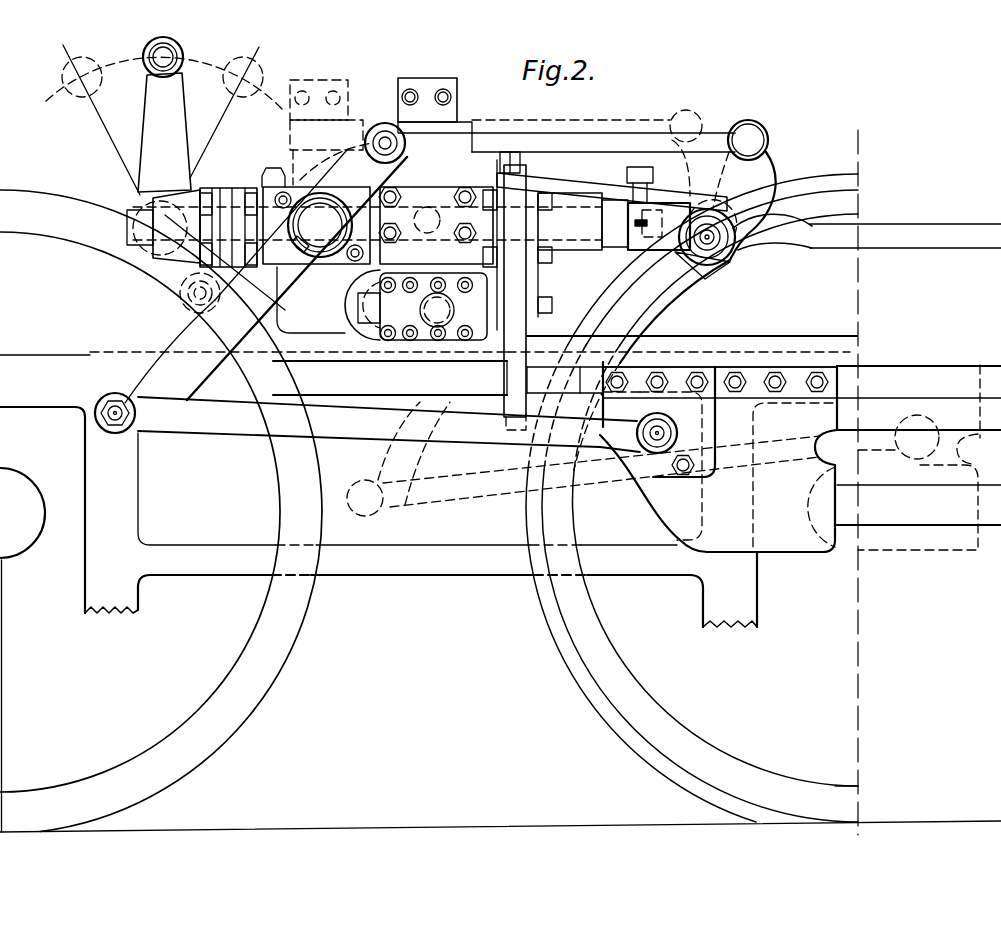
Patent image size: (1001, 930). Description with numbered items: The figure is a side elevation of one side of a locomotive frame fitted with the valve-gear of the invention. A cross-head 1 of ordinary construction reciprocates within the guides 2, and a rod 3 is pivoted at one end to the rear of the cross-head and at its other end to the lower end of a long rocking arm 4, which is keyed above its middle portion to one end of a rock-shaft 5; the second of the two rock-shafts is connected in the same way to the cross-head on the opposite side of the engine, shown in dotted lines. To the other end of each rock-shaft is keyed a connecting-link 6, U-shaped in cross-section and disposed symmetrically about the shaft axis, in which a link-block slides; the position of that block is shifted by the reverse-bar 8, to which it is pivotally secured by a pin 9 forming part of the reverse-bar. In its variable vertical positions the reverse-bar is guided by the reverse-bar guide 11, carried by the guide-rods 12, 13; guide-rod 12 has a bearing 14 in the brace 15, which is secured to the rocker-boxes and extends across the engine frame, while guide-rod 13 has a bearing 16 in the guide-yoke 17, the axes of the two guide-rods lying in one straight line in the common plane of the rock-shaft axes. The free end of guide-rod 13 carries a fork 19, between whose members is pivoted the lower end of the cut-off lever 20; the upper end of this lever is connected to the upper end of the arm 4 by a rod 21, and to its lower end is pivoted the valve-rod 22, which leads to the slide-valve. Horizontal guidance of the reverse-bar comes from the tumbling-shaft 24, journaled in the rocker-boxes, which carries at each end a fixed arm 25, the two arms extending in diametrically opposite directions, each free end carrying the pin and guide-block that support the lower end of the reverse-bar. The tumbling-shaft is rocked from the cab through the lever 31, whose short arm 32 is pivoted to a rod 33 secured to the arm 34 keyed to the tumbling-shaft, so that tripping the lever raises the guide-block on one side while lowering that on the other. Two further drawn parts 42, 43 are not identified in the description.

The cross-head 1 is at (657, 487).
The guides 2 is at (895, 403).
The rod 3 is at (478, 420).
The rocking arm 4 is at (168, 384).
The rock-shaft 5 is at (316, 216).
The connecting-link 6 is at (318, 168).
The reverse-bar 8 is at (428, 80).
The pin 9 is at (427, 233).
The reverse-bar guide 11 is at (473, 123).
The guide-rod 12 is at (128, 210).
The guide-rod 13 is at (630, 238).
The bearing 14 is at (166, 226).
The brace 15 is at (232, 192).
The bearing 16 is at (577, 249).
The guide-yoke 17 is at (512, 295).
The fork 19 is at (700, 210).
The cut-off lever 20 is at (700, 124).
The rod 21 is at (583, 131).
The valve-rod 22 is at (904, 226).
The tumbling-shaft 24 is at (360, 340).
The fixed arm 25 is at (426, 354).
The lever 31 is at (146, 118).
The short arm 32 is at (190, 308).
The rod 33 is at (232, 282).
The arm 34 is at (348, 312).
The rod 42 is at (592, 176).
The nut 43 is at (521, 163).